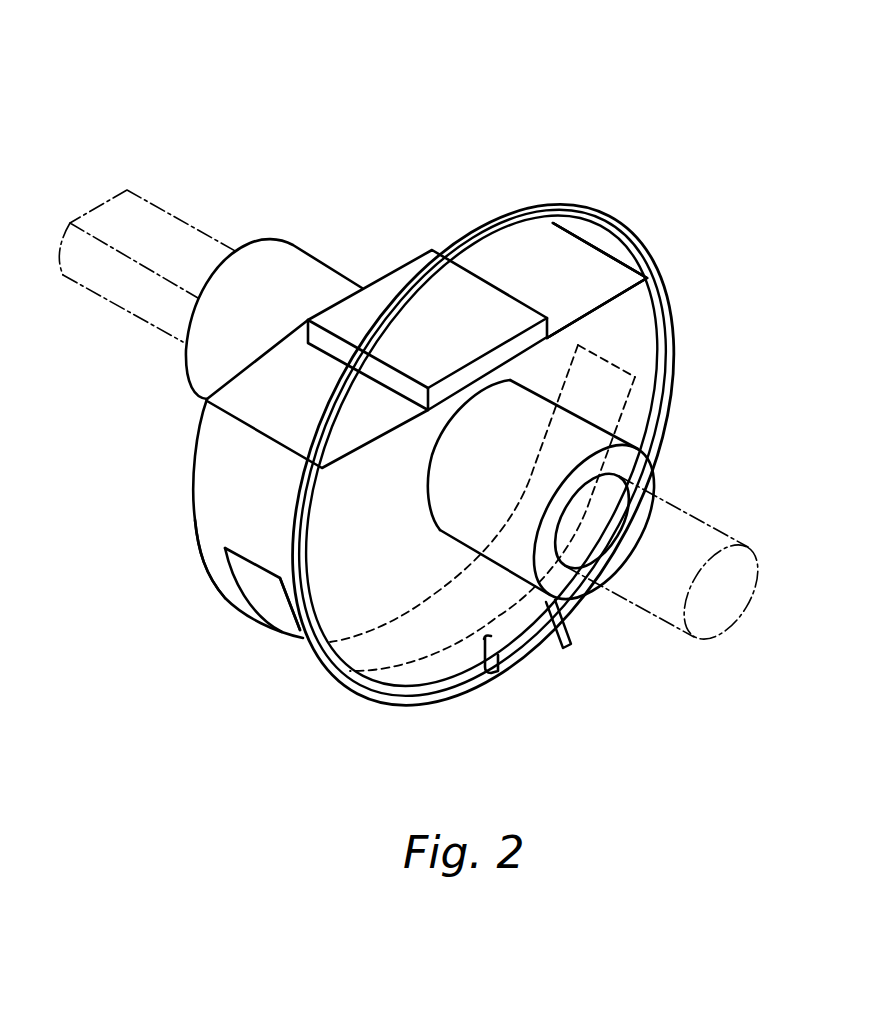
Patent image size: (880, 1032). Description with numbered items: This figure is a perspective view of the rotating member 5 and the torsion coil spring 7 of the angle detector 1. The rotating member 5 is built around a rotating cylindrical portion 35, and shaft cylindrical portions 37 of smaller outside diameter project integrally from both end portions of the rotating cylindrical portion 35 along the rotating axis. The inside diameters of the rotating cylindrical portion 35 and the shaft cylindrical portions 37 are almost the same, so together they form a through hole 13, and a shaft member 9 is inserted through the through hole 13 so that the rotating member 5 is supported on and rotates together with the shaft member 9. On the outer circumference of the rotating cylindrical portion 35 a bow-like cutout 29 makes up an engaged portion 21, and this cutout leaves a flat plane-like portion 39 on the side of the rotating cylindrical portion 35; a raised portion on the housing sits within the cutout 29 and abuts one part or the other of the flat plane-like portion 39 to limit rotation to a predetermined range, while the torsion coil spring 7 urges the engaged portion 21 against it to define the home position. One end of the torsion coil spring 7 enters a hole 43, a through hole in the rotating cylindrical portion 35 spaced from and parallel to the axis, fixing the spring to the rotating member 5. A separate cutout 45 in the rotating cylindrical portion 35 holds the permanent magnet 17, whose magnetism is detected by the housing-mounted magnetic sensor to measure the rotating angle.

The angle detector 1 is at (590, 100).
The rotating member 5 is at (193, 500).
The torsion coil spring 7 is at (576, 208).
The shaft member 9 is at (700, 523).
The through hole 13 is at (580, 552).
The permanent magnet 17 is at (273, 615).
The engaged portion 21 is at (581, 268).
The cutout 29 is at (597, 280).
The rotating cylindrical portion 35 is at (210, 587).
The shaft cylindrical portions 37 is at (320, 260).
The flat plane-like portion 39 is at (278, 388).
The hole 43 is at (483, 621).
The cutout 45 is at (290, 630).